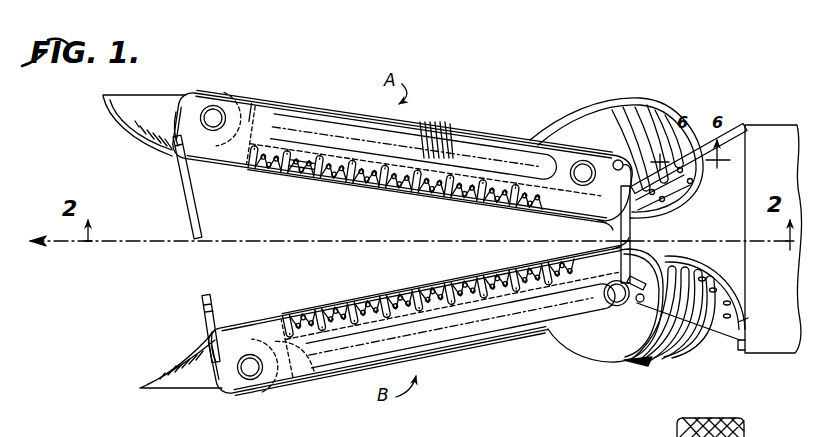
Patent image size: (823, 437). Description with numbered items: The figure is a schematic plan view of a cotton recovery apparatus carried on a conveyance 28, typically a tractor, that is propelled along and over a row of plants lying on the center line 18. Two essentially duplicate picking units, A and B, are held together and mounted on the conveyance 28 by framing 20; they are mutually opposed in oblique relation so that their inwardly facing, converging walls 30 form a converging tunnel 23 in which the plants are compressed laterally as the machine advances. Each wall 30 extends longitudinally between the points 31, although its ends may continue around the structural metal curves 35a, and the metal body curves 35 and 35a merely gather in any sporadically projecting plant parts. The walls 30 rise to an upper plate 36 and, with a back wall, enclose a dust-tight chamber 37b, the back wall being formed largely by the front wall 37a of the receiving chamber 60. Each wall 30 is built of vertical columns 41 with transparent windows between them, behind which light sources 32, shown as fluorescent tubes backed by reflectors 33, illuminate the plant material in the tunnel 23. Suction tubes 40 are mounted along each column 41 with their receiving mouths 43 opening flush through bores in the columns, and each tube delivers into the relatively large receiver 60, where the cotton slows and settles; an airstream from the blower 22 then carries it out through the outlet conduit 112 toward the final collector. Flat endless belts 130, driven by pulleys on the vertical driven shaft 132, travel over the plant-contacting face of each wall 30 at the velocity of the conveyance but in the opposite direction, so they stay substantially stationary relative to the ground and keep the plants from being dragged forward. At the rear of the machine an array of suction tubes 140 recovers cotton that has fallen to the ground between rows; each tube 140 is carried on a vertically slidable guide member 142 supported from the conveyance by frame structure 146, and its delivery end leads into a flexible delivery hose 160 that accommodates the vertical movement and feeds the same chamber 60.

The center line 18 is at (76, 243).
The framing 20 is at (176, 176).
The air blower 22 is at (250, 102).
The converging tunnel 23 is at (417, 236).
The conveyance 28 is at (782, 122).
The converging walls 30 is at (388, 198).
The wall end points 31 is at (215, 170).
The light sources 32 is at (248, 166).
The reflectors 33 is at (346, 186).
The metal body curves 35 is at (135, 140).
The structural metal curves 35a is at (172, 112).
The upper plate 36 is at (373, 150).
The front wall of receiving chamber 37a is at (445, 172).
The dust-tight chamber 37b is at (296, 160).
The suction tubes 40 is at (326, 164).
The columns 41 is at (270, 172).
The product receiving mouths 43 is at (306, 176).
The receiving chamber 60 is at (342, 96).
The outlet conduit 112 is at (580, 158).
The flat endless belts 130 is at (430, 124).
The vertical driven shaft 132 is at (614, 160).
The rear suction tubes 140 is at (727, 316).
The guide member 142 is at (643, 295).
The frame structure 146 is at (732, 288).
The flexible delivery hose 160 is at (660, 120).